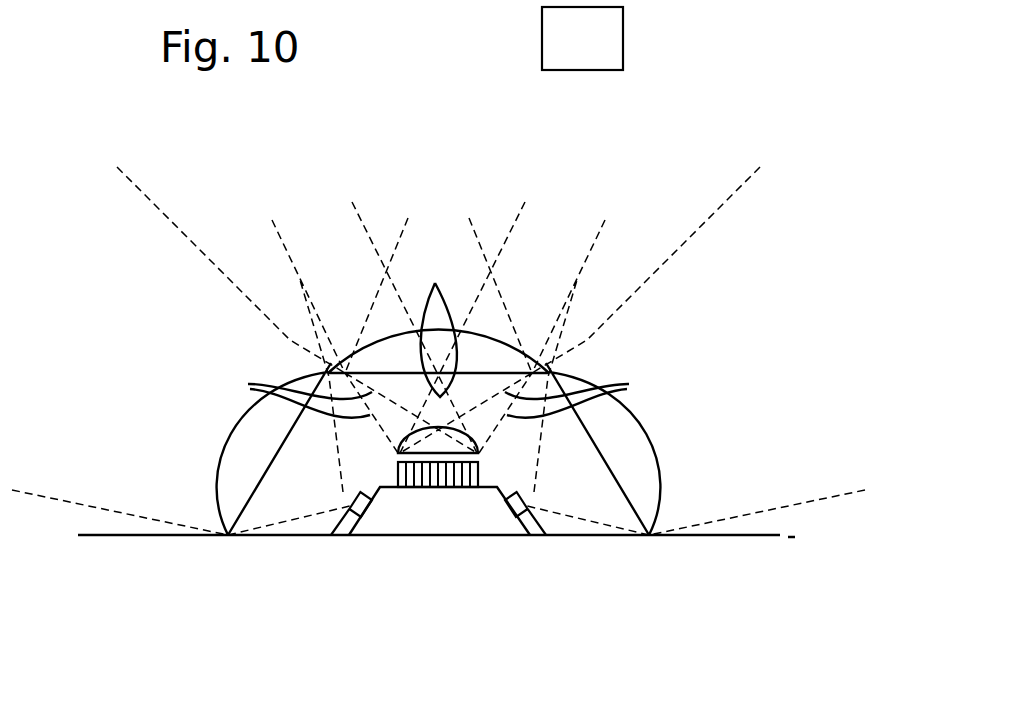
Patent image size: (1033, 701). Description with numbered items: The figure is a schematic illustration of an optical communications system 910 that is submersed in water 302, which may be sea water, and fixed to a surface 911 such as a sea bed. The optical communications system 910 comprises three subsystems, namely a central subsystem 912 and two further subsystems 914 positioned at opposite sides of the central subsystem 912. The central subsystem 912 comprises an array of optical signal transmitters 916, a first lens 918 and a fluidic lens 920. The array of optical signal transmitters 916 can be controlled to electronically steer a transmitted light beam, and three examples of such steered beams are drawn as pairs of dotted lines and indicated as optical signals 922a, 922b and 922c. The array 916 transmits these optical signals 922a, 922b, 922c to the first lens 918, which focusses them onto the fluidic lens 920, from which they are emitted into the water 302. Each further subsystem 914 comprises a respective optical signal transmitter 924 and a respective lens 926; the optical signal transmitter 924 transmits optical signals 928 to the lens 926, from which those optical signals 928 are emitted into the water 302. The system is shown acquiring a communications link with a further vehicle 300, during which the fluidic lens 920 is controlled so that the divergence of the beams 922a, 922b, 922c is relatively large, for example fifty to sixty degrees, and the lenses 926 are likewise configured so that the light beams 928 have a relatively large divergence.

The further vehicle 300 is at (600, 43).
The water 302 is at (441, 116).
The optical communications system 910 is at (513, 538).
The surface 911 is at (172, 538).
The central subsystem 912 is at (428, 496).
The further subsystems 914 is at (379, 518).
The array of optical signal transmitters 916 is at (460, 488).
The first lens 918 is at (463, 428).
The fluidic lens 920 is at (527, 345).
The steered light beam 922a is at (282, 237).
The steered light beam 922b is at (360, 218).
The steered light beam 922c is at (597, 233).
The optical signal transmitter 924 is at (332, 535).
The lens 926 is at (222, 458).
The optical signals 928 is at (167, 218).